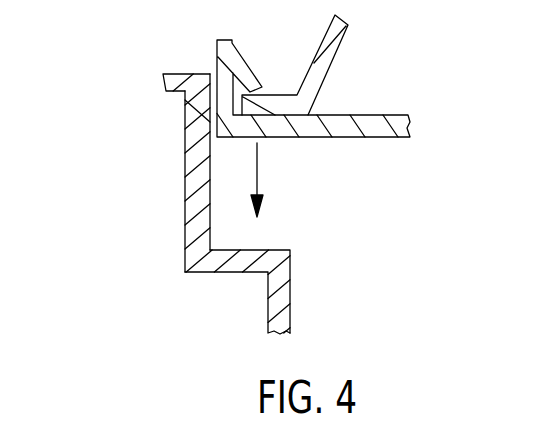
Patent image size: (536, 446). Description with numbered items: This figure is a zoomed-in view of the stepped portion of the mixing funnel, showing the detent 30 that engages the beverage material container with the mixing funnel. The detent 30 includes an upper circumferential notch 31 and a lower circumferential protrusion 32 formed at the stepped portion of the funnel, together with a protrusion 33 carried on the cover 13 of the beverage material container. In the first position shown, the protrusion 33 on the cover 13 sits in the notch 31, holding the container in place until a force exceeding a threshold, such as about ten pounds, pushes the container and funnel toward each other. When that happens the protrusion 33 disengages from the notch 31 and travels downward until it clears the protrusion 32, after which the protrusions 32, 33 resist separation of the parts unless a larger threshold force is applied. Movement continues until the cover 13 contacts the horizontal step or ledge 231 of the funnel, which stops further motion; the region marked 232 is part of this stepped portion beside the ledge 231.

The cover 13 is at (370, 130).
The detent 30 is at (149, 173).
The upper circumferential notch 31 is at (208, 106).
The lower circumferential protrusion 32 is at (195, 204).
The protrusion 33 is at (246, 180).
The horizontal step or ledge 231 is at (216, 248).
The bracket corner 232 is at (168, 276).